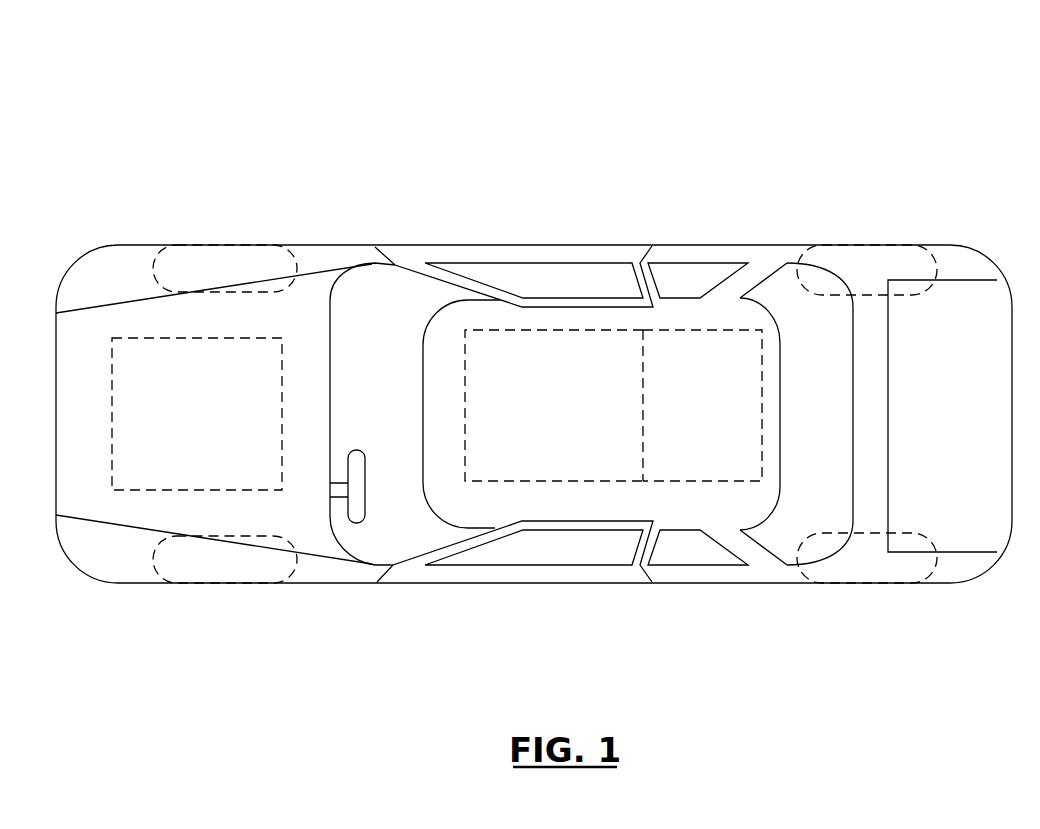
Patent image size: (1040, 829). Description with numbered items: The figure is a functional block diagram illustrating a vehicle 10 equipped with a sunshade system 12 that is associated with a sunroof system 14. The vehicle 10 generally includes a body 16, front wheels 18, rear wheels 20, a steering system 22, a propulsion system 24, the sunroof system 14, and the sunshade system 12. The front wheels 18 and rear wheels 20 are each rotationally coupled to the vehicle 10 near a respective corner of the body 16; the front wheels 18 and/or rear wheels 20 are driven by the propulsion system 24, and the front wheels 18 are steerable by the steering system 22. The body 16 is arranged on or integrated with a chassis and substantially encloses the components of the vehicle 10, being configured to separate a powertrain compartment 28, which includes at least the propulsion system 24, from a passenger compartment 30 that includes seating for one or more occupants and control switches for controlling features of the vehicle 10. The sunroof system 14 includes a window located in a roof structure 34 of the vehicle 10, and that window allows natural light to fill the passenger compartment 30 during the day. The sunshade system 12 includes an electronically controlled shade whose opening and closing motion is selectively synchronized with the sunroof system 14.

The vehicle 10 is at (548, 128).
The sunshade system 12 is at (702, 405).
The sunroof system 14 is at (554, 405).
The body 16 is at (417, 245).
The front wheels 18 is at (226, 245).
The rear wheels 20 is at (853, 245).
The steering system 22 is at (352, 450).
The propulsion system 24 is at (197, 414).
The powertrain compartment 28 is at (112, 306).
The passenger compartment 30 is at (674, 304).
The roof structure 34 is at (745, 510).